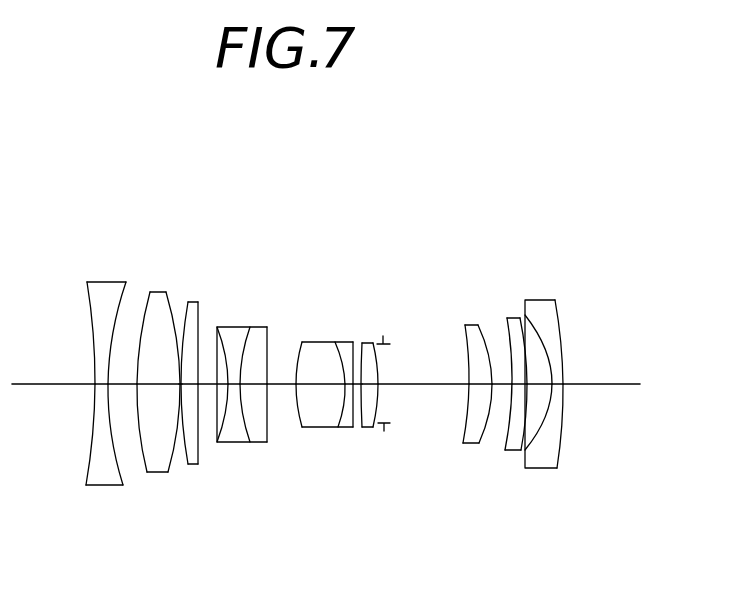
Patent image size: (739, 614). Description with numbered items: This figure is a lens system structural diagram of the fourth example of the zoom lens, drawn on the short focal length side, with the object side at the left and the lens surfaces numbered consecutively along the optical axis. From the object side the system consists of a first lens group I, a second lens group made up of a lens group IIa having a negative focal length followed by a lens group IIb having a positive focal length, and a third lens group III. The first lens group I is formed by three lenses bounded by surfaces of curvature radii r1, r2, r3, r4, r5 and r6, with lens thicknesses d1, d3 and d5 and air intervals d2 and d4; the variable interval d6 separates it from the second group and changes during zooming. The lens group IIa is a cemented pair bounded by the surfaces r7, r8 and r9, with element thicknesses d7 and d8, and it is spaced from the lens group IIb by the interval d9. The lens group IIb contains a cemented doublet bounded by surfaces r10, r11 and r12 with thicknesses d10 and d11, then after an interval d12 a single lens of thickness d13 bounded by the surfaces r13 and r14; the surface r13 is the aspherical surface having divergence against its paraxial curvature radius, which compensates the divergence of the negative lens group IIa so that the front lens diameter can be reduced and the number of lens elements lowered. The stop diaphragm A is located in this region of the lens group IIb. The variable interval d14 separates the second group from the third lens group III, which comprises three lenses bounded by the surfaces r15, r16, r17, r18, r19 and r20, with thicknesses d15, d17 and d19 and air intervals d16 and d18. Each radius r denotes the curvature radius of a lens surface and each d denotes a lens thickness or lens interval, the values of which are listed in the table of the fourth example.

The first lens group I is at (50, 190).
The lens group IIa is at (215, 190).
The lens group IIb is at (435, 190).
The third lens group III is at (443, 190).
The stop diaphragm A is at (384, 344).
The curvature radius of first lens surface r1 is at (85, 298).
The curvature radius of second lens surface r2 is at (113, 293).
The curvature radius of third lens surface r3 is at (143, 303).
The curvature radius of fourth lens surface r4 is at (165, 293).
The curvature radius of fifth lens surface r5 is at (190, 305).
The curvature radius of sixth lens surface r6 is at (200, 308).
The curvature radius of seventh lens surface r7 is at (219, 327).
The curvature radius of eighth lens surface r8 is at (250, 327).
The curvature radius of ninth lens surface r9 is at (269, 383).
The curvature radius of tenth lens surface r10 is at (300, 342).
The curvature radius of eleventh lens surface r11 is at (333, 342).
The curvature radius of twelfth lens surface r12 is at (353, 342).
The curvature radius of thirteenth lens surface r13 is at (365, 343).
The curvature radius of fourteenth lens surface r14 is at (375, 343).
The curvature radius of fifteenth lens surface r15 is at (465, 326).
The curvature radius of sixteenth lens surface r16 is at (478, 326).
The curvature radius of seventeenth lens surface r17 is at (507, 319).
The curvature radius of eighteenth lens surface r18 is at (521, 318).
The curvature radius of nineteenth lens surface r19 is at (525, 315).
The curvature radius of twentieth lens surface r20 is at (560, 316).
The lens thickness d1 is at (103, 386).
The lens interval d2 is at (172, 390).
The lens thickness d3 is at (168, 387).
The lens interval d4 is at (180, 387).
The lens thickness d5 is at (191, 390).
The lens interval d6 is at (207, 387).
The lens thickness d7 is at (240, 390).
The lens thickness d8 is at (255, 387).
The lens interval d9 is at (280, 385).
The lens thickness d10 is at (317, 387).
The lens thickness d11 is at (349, 370).
The lens interval d12 is at (364, 387).
The lens thickness d13 is at (370, 387).
The lens interval d14 is at (417, 387).
The lens thickness d15 is at (482, 388).
The lens interval d16 is at (507, 385).
The lens thickness d17 is at (515, 387).
The lens interval d18 is at (528, 440).
The lens thickness d19 is at (559, 387).